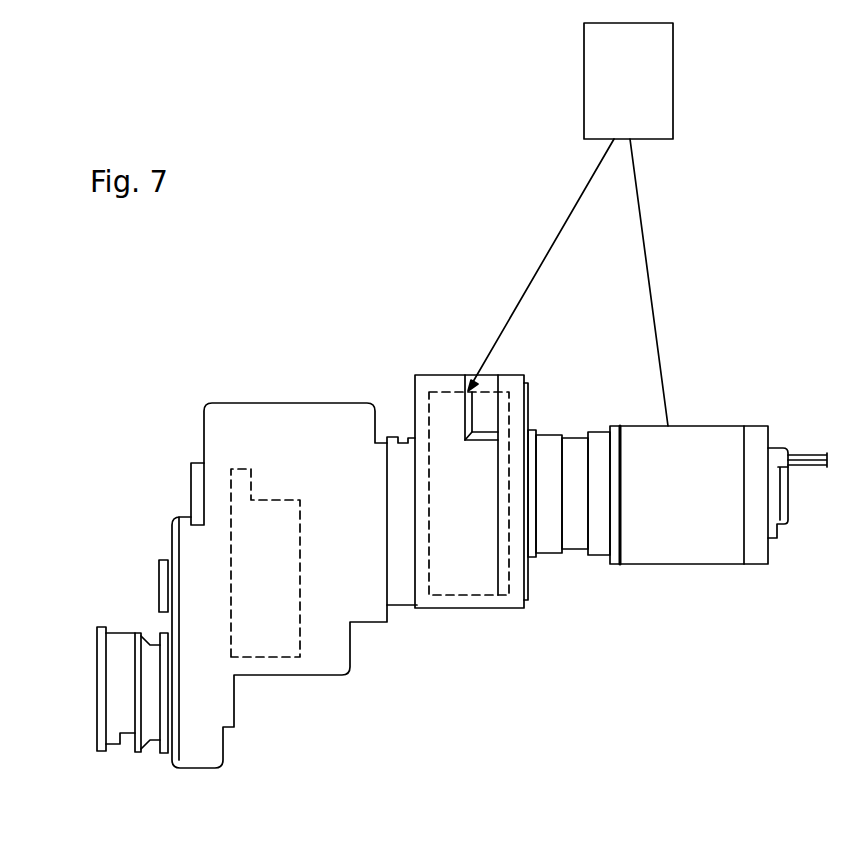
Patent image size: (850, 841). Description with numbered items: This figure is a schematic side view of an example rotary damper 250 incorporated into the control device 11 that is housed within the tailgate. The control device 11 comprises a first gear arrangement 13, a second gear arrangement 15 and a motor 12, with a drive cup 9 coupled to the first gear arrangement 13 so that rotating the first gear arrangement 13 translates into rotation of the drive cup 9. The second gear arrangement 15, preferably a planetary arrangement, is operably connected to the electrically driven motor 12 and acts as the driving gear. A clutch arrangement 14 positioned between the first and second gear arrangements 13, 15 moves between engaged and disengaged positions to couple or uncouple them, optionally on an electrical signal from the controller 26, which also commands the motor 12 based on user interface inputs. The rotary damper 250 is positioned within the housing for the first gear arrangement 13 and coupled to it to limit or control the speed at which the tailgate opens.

The drive cup 9 is at (103, 752).
The control device 11 is at (197, 452).
The motor 12 is at (667, 565).
The first gear arrangement 13 is at (287, 403).
The clutch arrangement 14 is at (463, 610).
The second gear arrangement 15 is at (572, 550).
The controller 26 is at (673, 89).
The rotary damper 250 is at (242, 638).